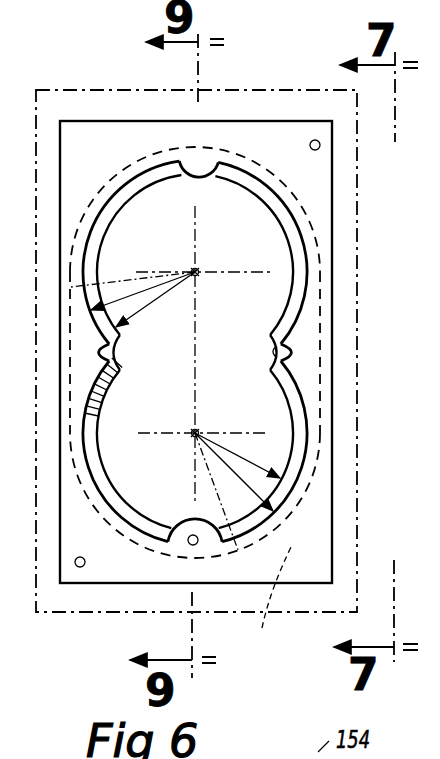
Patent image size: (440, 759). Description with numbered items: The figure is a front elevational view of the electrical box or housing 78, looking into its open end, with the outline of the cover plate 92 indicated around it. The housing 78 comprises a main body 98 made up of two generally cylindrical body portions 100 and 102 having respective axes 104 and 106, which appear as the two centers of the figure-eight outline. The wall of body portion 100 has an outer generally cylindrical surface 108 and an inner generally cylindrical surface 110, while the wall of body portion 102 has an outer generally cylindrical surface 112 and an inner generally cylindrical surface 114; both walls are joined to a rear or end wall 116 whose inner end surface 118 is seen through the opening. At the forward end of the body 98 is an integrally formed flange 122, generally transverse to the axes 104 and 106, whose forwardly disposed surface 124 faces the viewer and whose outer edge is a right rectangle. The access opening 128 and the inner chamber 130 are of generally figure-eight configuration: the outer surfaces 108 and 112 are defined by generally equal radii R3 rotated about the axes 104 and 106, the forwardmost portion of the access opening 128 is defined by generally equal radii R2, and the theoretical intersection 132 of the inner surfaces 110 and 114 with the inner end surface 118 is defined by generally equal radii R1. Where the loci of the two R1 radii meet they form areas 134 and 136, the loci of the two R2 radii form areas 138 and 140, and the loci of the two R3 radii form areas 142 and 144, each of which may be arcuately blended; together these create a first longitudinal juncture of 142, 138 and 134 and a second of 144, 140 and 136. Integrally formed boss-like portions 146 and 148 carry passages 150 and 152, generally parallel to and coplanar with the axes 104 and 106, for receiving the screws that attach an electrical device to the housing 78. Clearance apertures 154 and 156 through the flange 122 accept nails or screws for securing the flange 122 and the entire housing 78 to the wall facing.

The electrical box or housing 78 is at (266, 120).
The cover plate 92 is at (57, 90).
The main body 98 is at (328, 342).
The cylindrical body portion 100 is at (358, 197).
The cylindrical body portion 102 is at (267, 603).
The axis 104 is at (195, 272).
The axis 106 is at (195, 433).
The outer generally cylindrical surface 108 is at (312, 256).
The inner generally cylindrical surface 110 is at (300, 292).
The outer generally cylindrical surface 112 is at (318, 510).
The inner generally cylindrical surface 114 is at (284, 424).
The rear or end wall 116 is at (136, 174).
The inner end surface 118 is at (170, 230).
The flange 122 is at (83, 118).
The forwardly disposed surface 124 is at (314, 556).
The access opening 128 is at (292, 478).
The inner chamber 130 is at (234, 345).
The theoretical intersection 132 is at (150, 218).
The intersection area 134 is at (128, 348).
The intersection area 136 is at (270, 358).
The intersection area 138 is at (122, 362).
The intersection area 140 is at (300, 380).
The intersection area 142 is at (108, 388).
The intersection area 144 is at (302, 356).
The boss-like portion 146 is at (211, 186).
The boss-like portion 148 is at (188, 512).
The passage 150 is at (228, 150).
The passage 152 is at (195, 548).
The clearance aperture 154 is at (336, 110).
The clearance aperture 156 is at (82, 568).
The radius R1 is at (198, 375).
The radius R2 is at (182, 391).
The radius R3 is at (154, 410).